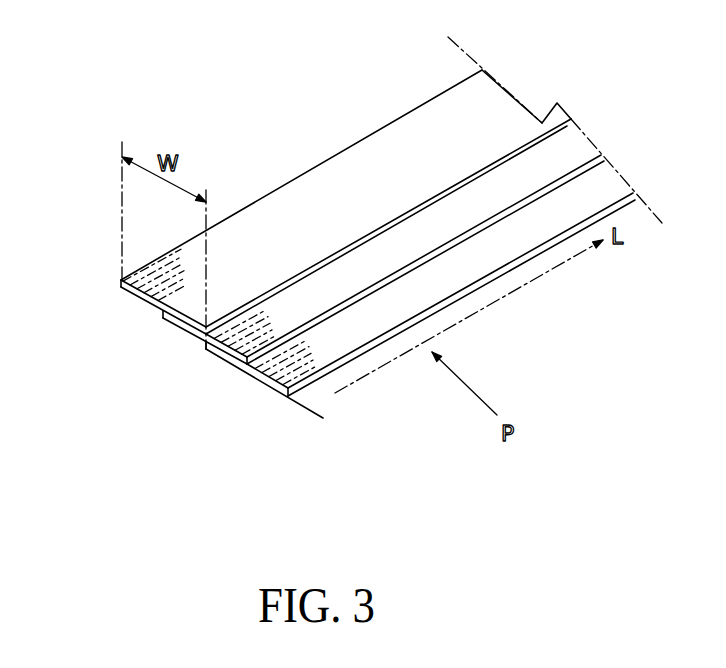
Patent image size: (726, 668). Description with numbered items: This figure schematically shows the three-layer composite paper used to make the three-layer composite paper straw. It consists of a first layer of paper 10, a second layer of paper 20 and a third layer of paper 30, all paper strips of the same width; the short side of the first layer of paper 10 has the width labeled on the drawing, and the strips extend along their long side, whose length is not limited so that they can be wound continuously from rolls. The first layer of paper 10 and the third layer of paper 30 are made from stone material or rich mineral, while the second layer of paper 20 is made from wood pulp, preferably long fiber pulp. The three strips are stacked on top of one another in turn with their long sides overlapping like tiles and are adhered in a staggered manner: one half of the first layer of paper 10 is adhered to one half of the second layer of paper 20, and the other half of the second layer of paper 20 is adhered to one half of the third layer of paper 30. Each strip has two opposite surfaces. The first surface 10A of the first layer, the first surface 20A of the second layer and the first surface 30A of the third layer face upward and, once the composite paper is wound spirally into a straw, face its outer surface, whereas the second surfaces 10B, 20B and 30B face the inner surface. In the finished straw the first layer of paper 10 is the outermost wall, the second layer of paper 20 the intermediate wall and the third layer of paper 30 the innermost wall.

The first layer of paper 10 is at (308, 222).
The first surface of the first layer of paper 10A is at (263, 208).
The second surface of the first layer of paper 10B is at (145, 305).
The second layer of paper 20 is at (370, 231).
The first surface of the second layer of paper 20A is at (565, 145).
The second surface of the second layer of paper 20B is at (195, 341).
The third layer of paper 30 is at (448, 297).
The first surface of the third layer of paper 30A is at (593, 193).
The second surface of the third layer of paper 30B is at (237, 372).